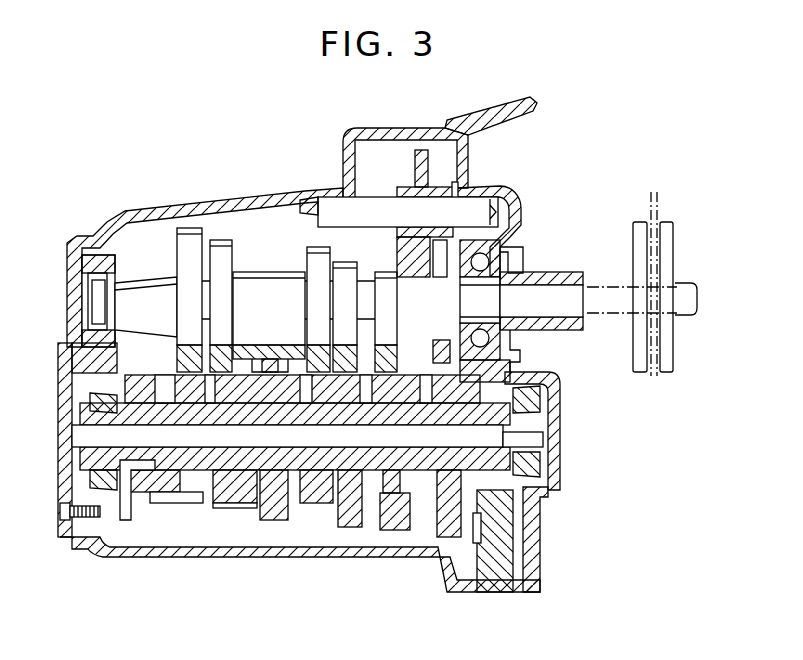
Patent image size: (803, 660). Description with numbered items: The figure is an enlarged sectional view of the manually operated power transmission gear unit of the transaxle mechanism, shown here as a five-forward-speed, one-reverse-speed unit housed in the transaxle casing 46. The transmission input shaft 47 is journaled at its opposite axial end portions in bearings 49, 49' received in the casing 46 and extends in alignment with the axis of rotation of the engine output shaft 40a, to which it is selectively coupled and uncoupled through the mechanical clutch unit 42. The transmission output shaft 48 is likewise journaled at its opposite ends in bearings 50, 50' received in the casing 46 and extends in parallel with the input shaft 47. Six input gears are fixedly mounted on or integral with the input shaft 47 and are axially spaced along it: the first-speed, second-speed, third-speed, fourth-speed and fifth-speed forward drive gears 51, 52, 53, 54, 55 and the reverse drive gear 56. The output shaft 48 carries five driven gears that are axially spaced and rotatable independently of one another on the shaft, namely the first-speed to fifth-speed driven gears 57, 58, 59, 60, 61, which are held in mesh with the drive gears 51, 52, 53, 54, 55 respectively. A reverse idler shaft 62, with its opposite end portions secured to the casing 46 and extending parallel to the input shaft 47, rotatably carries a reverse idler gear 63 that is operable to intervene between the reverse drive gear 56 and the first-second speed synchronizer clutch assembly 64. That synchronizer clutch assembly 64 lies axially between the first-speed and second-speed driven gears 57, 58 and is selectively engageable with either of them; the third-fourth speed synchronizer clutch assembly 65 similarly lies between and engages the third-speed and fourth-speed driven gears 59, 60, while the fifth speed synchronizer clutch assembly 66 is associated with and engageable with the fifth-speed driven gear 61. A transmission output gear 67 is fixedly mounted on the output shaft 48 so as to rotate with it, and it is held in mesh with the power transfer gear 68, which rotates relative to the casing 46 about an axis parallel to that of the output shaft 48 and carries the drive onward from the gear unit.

The engine output shaft 40a is at (680, 291).
The mechanical clutch unit 42 is at (650, 215).
The transaxle casing 46 is at (483, 112).
The transmission input shaft 47 is at (586, 308).
The transmission output shaft 48 is at (543, 425).
The bearing 49 is at (113, 291).
The bearing 49' is at (526, 250).
The bearing 50 is at (64, 500).
The bearing 50' is at (554, 538).
The first-speed forward drive gear 51 is at (427, 243).
The second-speed forward drive gear 52 is at (330, 262).
The third-speed forward drive gear 53 is at (240, 271).
The fourth-speed forward drive gear 54 is at (227, 240).
The fifth-speed forward drive gear 55 is at (183, 227).
The reverse drive gear 56 is at (357, 270).
The first-speed driven gear 57 is at (447, 537).
The second-speed driven gear 58 is at (350, 528).
The third-speed driven gear 59 is at (322, 503).
The fourth-speed driven gear 60 is at (227, 503).
The fifth-speed driven gear 61 is at (192, 503).
The reverse idler shaft 62 is at (397, 191).
The reverse idler gear 63 is at (424, 150).
The first-second speed synchronizer clutch assembly 64 is at (394, 537).
The third-fourth speed synchronizer clutch assembly 65 is at (270, 521).
The fifth speed synchronizer clutch assembly 66 is at (140, 522).
The transmission output gear 67 is at (500, 380).
The power transfer gear 68 is at (492, 565).